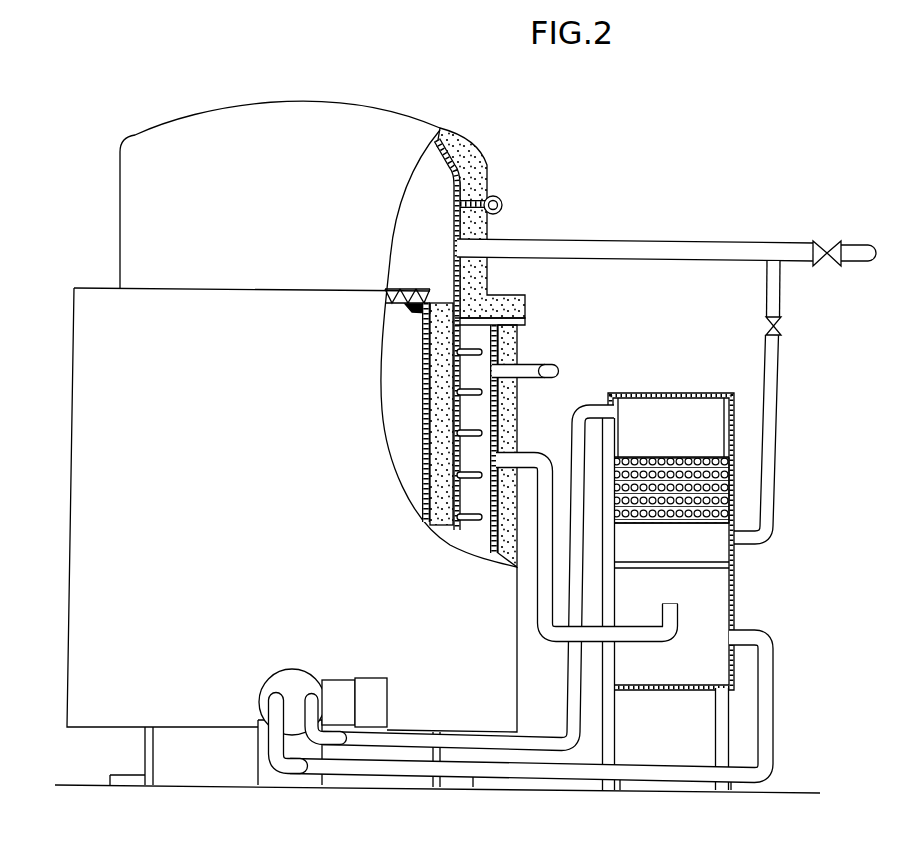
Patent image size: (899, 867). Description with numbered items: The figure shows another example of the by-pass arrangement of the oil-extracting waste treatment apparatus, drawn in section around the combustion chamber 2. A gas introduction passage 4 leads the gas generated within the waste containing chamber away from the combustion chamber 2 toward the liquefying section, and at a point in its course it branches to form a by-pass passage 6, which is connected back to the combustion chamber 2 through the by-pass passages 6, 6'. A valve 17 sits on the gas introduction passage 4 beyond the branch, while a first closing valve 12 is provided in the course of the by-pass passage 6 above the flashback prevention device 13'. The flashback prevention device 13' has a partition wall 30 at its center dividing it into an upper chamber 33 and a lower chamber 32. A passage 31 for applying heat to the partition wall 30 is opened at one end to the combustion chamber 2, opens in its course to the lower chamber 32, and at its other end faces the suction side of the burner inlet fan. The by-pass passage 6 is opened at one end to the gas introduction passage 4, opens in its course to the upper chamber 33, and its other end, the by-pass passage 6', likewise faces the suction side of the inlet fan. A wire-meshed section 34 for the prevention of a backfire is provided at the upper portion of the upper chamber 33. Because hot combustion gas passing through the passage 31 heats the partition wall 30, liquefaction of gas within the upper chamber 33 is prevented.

The combustion chamber 2 is at (468, 460).
The gas introduction passage 4 is at (637, 247).
The by-pass passage 6 is at (779, 399).
The by-pass passage 6' is at (463, 578).
The first closing valve 12 is at (781, 330).
The flashback prevention device 13' is at (724, 504).
The valve 17 is at (826, 241).
The partition wall 30 is at (680, 569).
The passage 31 is at (543, 582).
The lower chamber 32 is at (717, 677).
The upper chamber 33 is at (690, 550).
The wire-meshed section 34 is at (672, 459).